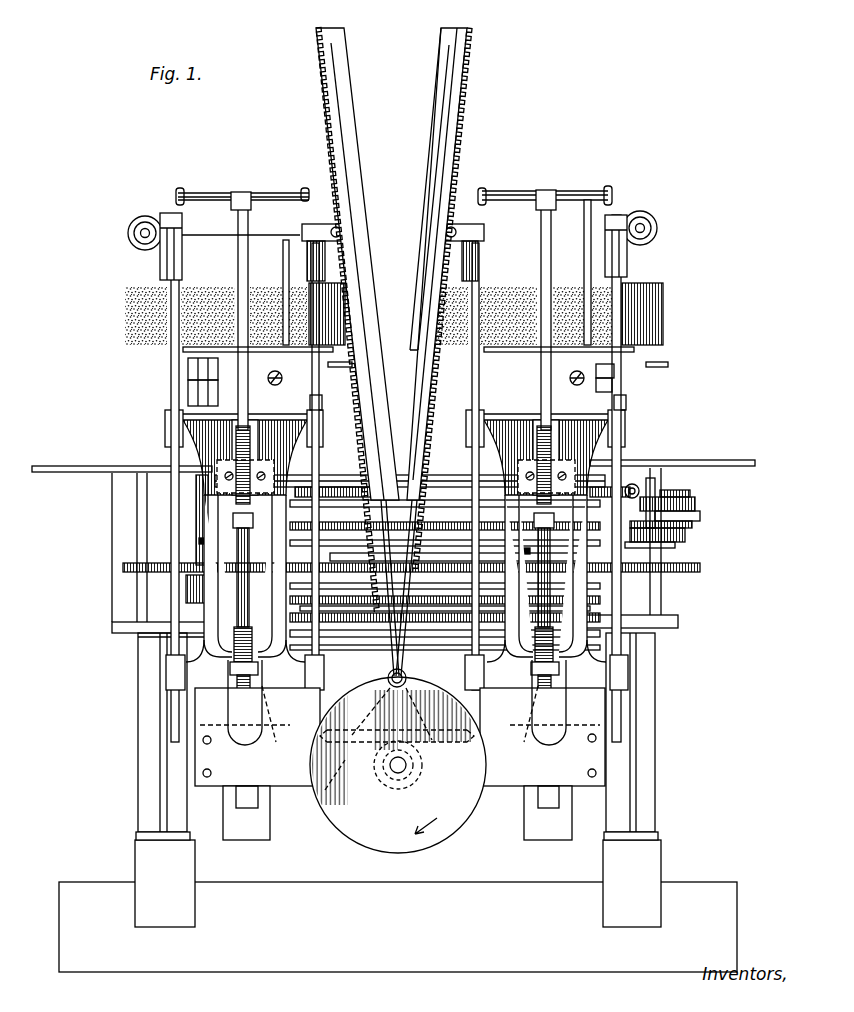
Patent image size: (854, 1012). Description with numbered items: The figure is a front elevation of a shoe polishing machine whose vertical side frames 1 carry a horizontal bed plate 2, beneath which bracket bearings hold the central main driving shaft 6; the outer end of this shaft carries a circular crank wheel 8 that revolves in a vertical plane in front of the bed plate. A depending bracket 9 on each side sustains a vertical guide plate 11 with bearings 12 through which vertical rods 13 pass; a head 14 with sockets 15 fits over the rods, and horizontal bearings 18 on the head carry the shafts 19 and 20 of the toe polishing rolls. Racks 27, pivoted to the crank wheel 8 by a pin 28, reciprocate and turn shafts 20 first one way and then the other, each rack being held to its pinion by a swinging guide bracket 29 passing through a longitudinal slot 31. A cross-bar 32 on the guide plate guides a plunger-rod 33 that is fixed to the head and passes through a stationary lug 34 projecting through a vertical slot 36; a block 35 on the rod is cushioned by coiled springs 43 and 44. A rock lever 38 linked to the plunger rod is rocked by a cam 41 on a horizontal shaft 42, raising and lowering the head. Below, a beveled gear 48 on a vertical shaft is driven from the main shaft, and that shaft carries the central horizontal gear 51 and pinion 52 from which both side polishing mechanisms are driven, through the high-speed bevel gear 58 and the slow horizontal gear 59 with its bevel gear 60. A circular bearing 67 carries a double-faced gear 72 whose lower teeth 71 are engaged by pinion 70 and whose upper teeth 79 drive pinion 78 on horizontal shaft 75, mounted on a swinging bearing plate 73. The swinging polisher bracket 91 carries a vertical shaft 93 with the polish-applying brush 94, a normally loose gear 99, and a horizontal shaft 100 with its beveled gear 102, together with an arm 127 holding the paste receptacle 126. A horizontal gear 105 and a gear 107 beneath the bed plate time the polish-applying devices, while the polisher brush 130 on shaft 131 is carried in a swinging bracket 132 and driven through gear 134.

The vertical side frames 1 is at (640, 801).
The horizontal bed plate 2 is at (122, 630).
The main horizontal driving shaft 6 is at (406, 766).
The circular crank wheel 8 is at (398, 765).
The vertical bracket 9 is at (397, 813).
The vertical guide plate 11 is at (400, 723).
The vertically-disposed bearings 12 is at (170, 680).
The vertical rods 13 is at (476, 383).
The head 14 is at (222, 222).
The sockets 15 is at (628, 256).
The horizontal bearings 18 is at (470, 237).
The horizontal shaft 19 is at (130, 237).
The horizontal shaft 20 is at (444, 232).
The racks 27 is at (456, 128).
The pin 28 is at (387, 686).
The swinging guide bracket 29 is at (432, 268).
The longitudinal slot 31 is at (333, 94).
The cross-bar 32 is at (166, 420).
The plunger-rod 33 is at (248, 260).
The stationary lug 34 is at (238, 680).
The block 35 is at (534, 520).
The vertical slot 36 is at (538, 535).
The rock lever 38 is at (560, 712).
The cam 41 is at (196, 495).
The horizontal shaft 42 is at (445, 602).
The coiled spring 43 is at (234, 440).
The coiled spring 44 is at (396, 663).
The beveled gear 48 is at (318, 788).
The horizontal gear 51 is at (358, 612).
The pinion 52 is at (403, 558).
The horizontal bevel gear 58 is at (199, 541).
The horizontal gear 59 is at (124, 568).
The bevel gear 60 is at (190, 578).
The circular bearing 67 is at (680, 540).
The pinion 70 is at (645, 522).
The lower teeth 71 is at (700, 519).
The double-faced gear 72 is at (700, 512).
The circular flat bearing plate 73 is at (690, 526).
The horizontal shaft 75 is at (300, 490).
The pinion 78 is at (652, 484).
The upper teeth 79 is at (690, 507).
The swinging polisher bracket 91 is at (614, 371).
The vertical shaft 93 is at (612, 386).
The polish-applying brush 94 is at (292, 292).
The horizontal gear 99 is at (323, 402).
The horizontal shaft 100 is at (575, 371).
The beveled gear 102 is at (275, 371).
The horizontal gear 105 is at (432, 688).
The horizontal gear 107 is at (399, 707).
The paste receptacle 126 is at (345, 327).
The arm 127 is at (340, 368).
The polisher brush 130 is at (128, 313).
The vertical shaft 131 is at (195, 388).
The swinging bracket 132 is at (190, 370).
The gear 134 is at (185, 351).